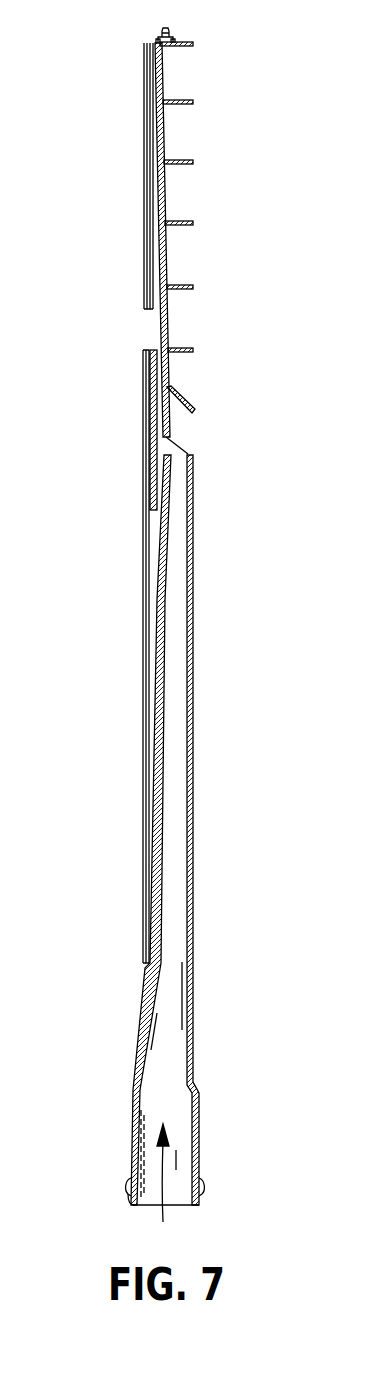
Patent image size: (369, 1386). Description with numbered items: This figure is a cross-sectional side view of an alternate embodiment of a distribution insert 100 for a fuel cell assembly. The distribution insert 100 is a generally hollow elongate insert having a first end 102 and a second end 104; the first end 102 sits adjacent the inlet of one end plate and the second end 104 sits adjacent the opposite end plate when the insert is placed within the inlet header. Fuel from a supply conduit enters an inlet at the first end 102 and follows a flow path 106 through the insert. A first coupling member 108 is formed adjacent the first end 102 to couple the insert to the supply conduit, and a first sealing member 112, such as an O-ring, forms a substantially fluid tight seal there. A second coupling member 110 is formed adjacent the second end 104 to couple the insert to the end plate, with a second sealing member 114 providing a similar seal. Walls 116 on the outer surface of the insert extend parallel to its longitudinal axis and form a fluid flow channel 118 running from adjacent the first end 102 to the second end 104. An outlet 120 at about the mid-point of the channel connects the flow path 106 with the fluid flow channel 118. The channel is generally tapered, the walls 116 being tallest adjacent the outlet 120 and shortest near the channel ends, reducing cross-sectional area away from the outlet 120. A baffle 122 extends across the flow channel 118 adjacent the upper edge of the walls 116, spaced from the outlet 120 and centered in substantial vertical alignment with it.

The distribution insert 100 is at (100, 320).
The first end 102 is at (197, 1140).
The second end 104 is at (192, 42).
The flow path 106 is at (163, 1187).
The first coupling member 108 is at (130, 1205).
The second coupling member 110 is at (164, 28).
The first sealing member 112 is at (127, 1190).
The second sealing member 114 is at (159, 39).
The walls 116 is at (144, 203).
The fluid flow channel 118 is at (164, 248).
The outlet 120 is at (168, 456).
The baffle 122 is at (150, 428).